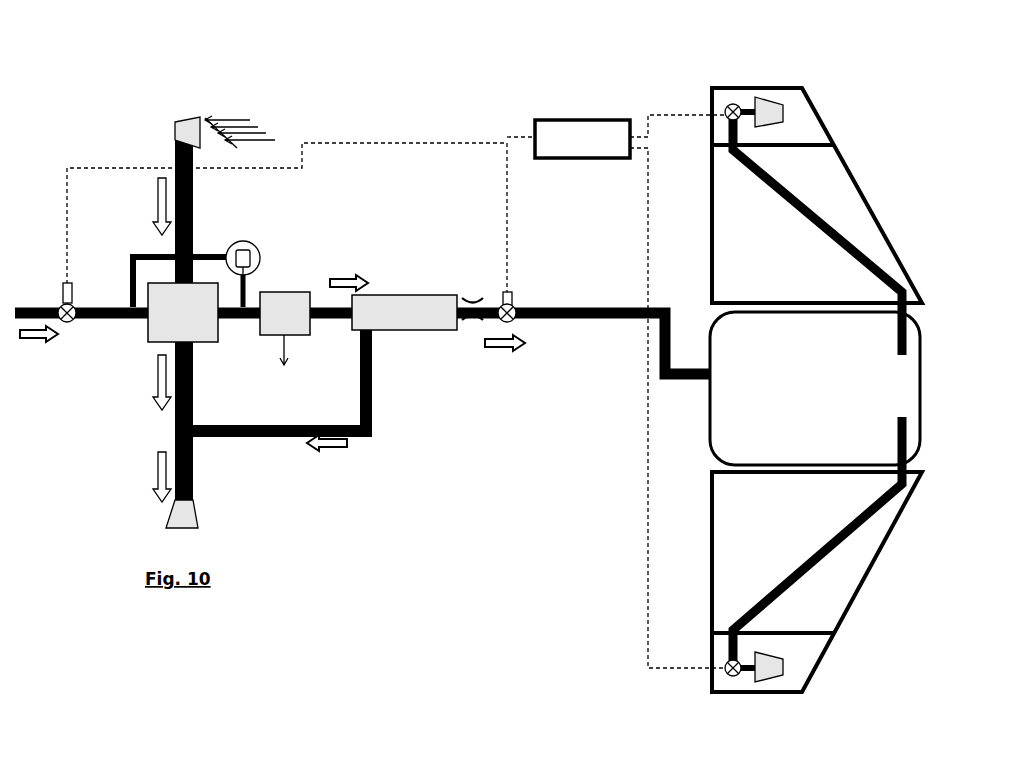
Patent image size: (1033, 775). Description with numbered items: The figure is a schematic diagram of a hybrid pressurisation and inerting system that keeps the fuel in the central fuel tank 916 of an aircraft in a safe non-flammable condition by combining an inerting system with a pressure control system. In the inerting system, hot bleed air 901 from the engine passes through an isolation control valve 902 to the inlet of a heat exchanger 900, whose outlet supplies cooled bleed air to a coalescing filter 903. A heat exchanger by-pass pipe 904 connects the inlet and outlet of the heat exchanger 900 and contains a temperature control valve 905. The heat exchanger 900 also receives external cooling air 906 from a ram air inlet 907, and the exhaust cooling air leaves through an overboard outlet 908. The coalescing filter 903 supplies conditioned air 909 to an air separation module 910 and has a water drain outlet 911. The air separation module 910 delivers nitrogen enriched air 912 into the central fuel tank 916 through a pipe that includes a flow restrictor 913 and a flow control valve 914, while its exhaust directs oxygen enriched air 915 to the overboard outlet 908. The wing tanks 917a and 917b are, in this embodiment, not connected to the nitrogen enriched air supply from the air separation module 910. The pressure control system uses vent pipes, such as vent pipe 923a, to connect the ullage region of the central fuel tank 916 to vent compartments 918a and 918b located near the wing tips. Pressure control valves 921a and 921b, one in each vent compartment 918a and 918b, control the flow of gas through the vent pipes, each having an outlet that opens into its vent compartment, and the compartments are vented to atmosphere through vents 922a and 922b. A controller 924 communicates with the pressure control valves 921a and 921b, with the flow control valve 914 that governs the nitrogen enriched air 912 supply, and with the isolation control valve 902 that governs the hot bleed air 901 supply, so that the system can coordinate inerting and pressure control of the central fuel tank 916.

The heat exchanger 900 is at (160, 330).
The hot bleed air 901 is at (40, 346).
The isolation control valve 902 is at (63, 305).
The coalescing filter 903 is at (280, 297).
The heat exchanger by-pass pipe 904 is at (142, 253).
The temperature control valve 905 is at (248, 245).
The external cooling air 906 is at (233, 115).
The ram air inlet 907 is at (175, 122).
The overboard outlet 908 is at (170, 513).
The conditioned air 909 is at (343, 275).
The air separation module 910 is at (393, 303).
The water drain outlet 911 is at (278, 345).
The nitrogen enriched air 912 is at (490, 348).
The flow restrictor 913 is at (472, 320).
The flow control valve 914 is at (510, 306).
The oxygen enriched air 915 is at (330, 446).
The central fuel tank 916 is at (737, 403).
The wing tank 917a is at (738, 208).
The wing tank 917b is at (737, 528).
The vent compartment 918a is at (722, 97).
The vent compartment 918b is at (720, 683).
The pressure control valve 921a is at (727, 115).
The pressure control valve 921b is at (727, 667).
The vent 922a is at (763, 103).
The vent 922b is at (763, 673).
The vent pipe 923a is at (810, 203).
The controller 924 is at (570, 120).